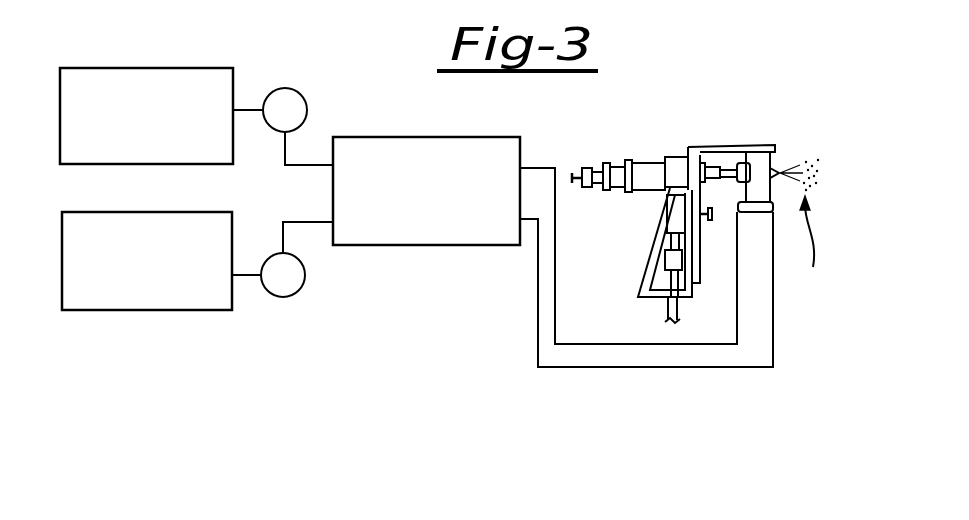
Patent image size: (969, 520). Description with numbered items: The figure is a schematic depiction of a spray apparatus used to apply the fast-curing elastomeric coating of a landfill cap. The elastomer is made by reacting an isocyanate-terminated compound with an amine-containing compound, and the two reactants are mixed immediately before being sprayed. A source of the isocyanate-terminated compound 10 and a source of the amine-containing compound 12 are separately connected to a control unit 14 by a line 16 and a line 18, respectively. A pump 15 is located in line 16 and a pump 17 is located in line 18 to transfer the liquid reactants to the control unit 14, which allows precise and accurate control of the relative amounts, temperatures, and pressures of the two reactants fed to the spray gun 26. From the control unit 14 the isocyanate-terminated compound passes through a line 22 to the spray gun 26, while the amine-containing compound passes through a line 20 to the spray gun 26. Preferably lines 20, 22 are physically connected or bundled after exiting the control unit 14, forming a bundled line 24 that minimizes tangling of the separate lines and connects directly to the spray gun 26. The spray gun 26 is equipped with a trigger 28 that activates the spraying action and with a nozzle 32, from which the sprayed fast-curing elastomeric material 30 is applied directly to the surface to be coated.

The source of isocyanate-terminated compound 10 is at (140, 68).
The source of amine-containing compound 12 is at (83, 310).
The control unit 14 is at (412, 245).
The pump 15 is at (293, 88).
The line 16 is at (312, 162).
The pump 17 is at (283, 297).
The line 18 is at (318, 222).
The line 20 is at (538, 267).
The line 22 is at (541, 168).
The bundled line 24 is at (617, 252).
The spray gun 26 is at (672, 152).
The trigger 28 is at (712, 213).
The sprayed fast-curing elastomeric material 30 is at (813, 246).
The nozzle 32 is at (777, 171).